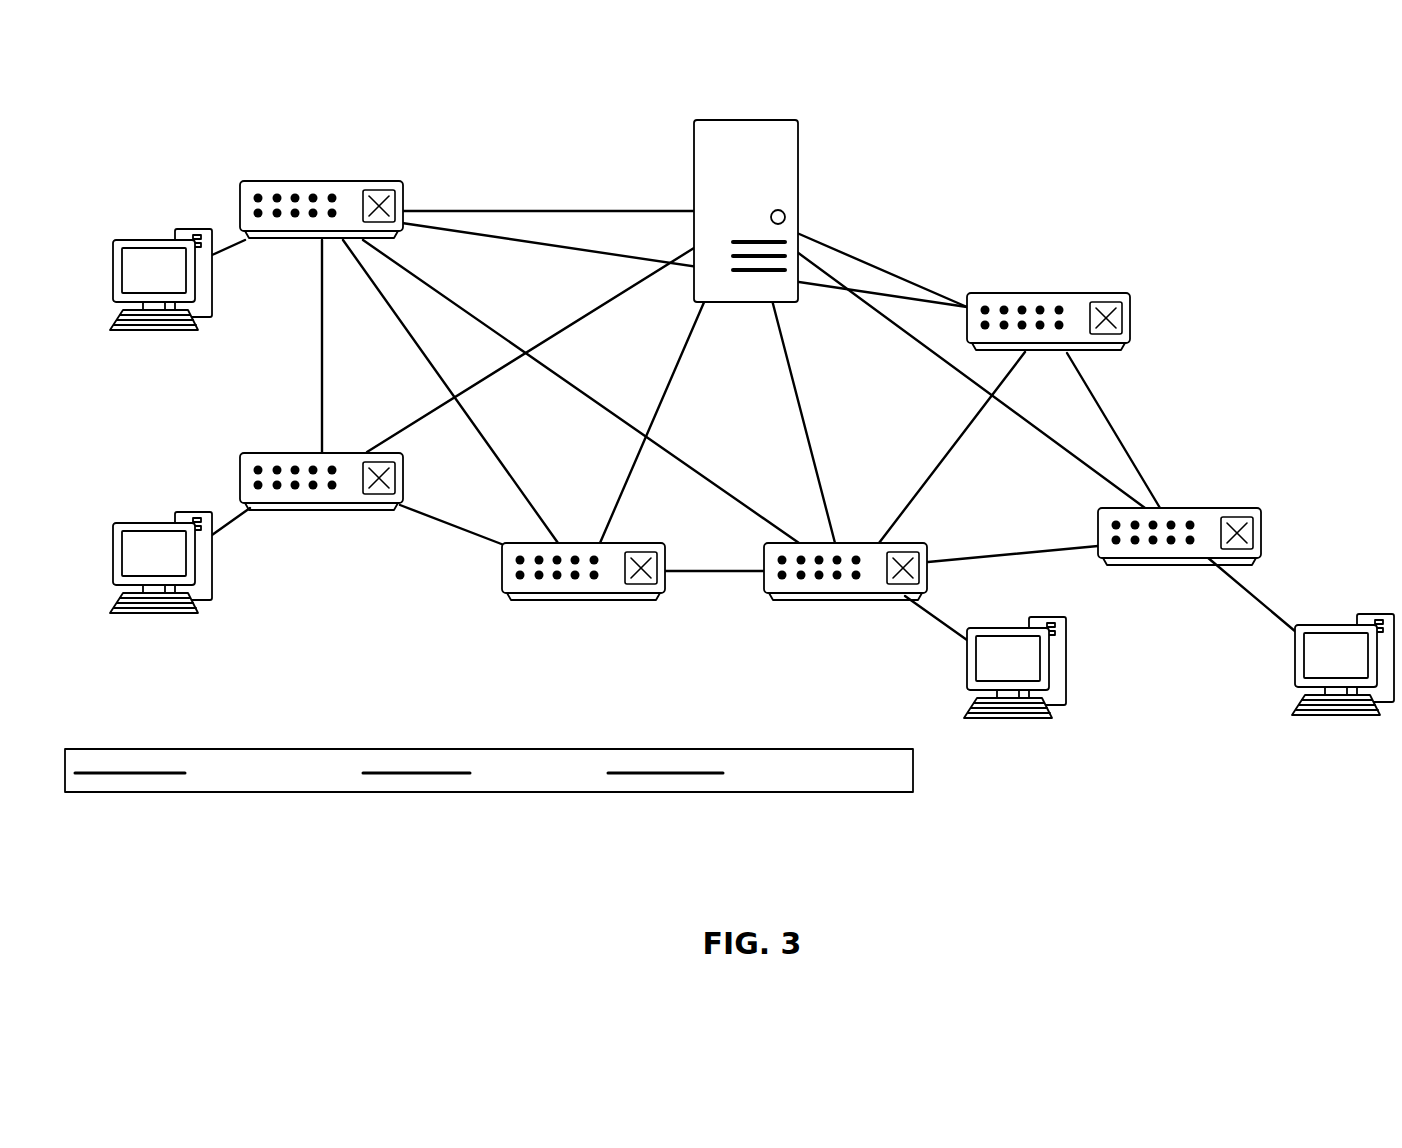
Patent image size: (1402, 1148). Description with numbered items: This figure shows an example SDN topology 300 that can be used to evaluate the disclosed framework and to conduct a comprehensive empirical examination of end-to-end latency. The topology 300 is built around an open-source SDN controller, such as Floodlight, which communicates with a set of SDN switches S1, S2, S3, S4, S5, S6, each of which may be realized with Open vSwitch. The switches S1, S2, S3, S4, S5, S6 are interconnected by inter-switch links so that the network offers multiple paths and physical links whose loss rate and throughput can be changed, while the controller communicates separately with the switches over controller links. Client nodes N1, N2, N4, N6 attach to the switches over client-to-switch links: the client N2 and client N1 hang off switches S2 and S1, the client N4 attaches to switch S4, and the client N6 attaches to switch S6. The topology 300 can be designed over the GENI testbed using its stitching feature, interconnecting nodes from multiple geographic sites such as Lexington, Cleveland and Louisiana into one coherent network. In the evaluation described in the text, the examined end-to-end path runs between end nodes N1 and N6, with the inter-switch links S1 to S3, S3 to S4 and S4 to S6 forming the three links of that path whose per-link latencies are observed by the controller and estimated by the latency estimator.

The SDN topology 300 is at (733, 437).
The SDN switch S1 is at (322, 518).
The SDN switch S2 is at (322, 174).
The SDN switch S3 is at (585, 609).
The SDN switch S4 is at (847, 609).
The SDN switch S5 is at (1052, 284).
The SDN switch S6 is at (1183, 580).
The end node N1 is at (160, 617).
The client node N2 is at (160, 334).
The client node N4 is at (1015, 723).
The end node N6 is at (1339, 720).